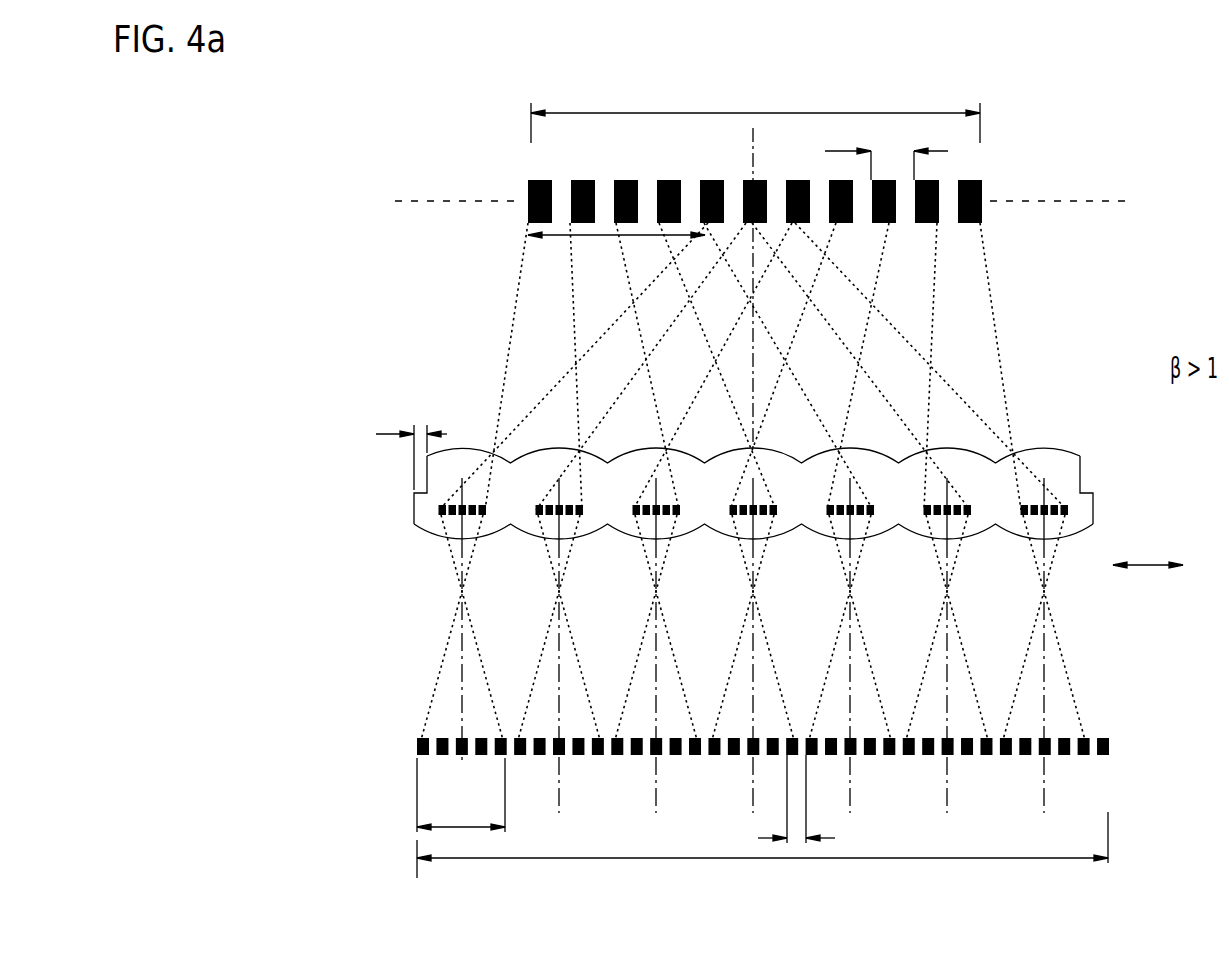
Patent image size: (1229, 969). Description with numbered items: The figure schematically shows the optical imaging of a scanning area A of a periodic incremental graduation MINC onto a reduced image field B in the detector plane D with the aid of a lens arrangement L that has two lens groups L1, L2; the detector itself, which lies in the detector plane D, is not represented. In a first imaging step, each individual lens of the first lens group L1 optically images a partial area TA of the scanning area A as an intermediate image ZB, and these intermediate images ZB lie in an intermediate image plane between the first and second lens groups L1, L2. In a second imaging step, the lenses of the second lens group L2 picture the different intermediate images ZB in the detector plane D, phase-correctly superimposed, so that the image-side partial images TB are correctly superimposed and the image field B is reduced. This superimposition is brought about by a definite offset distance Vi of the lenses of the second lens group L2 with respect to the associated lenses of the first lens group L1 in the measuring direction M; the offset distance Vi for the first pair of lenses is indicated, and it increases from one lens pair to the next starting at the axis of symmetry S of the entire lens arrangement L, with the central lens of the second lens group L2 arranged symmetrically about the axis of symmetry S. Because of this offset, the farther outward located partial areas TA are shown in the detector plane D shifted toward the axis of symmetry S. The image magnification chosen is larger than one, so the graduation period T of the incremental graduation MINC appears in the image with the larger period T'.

The detector plane D is at (388, 201).
The image field B is at (757, 113).
The graduation period in the image T' is at (886, 155).
The partial image on the image side TB is at (600, 235).
The lens arrangement L is at (400, 503).
The second lens group L2 is at (473, 450).
The first lens group L1 is at (418, 528).
The intermediate image ZB is at (438, 513).
The axis of symmetry S is at (750, 775).
The offset distance Vi is at (411, 438).
The measuring direction M is at (1148, 542).
The incremental graduation MINC is at (383, 744).
The partial area of the scanning area TA is at (461, 795).
The graduation period T is at (796, 799).
The scanning area A is at (748, 858).